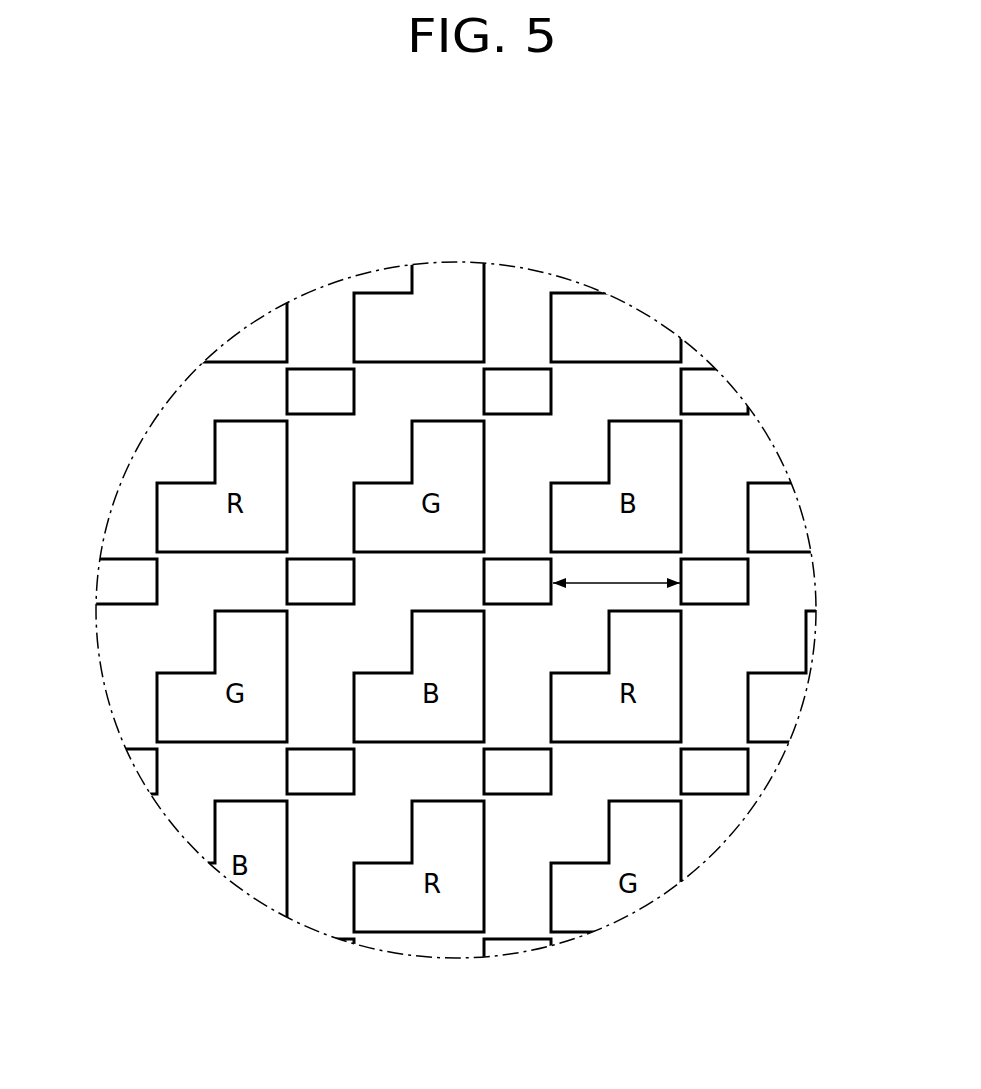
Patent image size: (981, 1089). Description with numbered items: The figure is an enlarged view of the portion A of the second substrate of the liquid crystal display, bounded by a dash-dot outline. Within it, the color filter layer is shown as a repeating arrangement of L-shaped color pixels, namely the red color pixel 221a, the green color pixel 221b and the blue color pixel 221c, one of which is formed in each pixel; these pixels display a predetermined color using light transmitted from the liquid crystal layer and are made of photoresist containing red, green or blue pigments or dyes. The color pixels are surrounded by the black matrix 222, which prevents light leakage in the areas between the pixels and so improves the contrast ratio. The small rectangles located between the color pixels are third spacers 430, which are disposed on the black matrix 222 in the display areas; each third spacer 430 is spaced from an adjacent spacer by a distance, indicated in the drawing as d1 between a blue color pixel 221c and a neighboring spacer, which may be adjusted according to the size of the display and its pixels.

The red color pixel 221a is at (160, 511).
The green color pixel 221b is at (445, 432).
The blue color pixel 221c is at (673, 450).
The third spacer 430 is at (743, 581).
The black matrix 222 is at (510, 935).
The portion A is at (623, 300).
The distance d1 is at (616, 572).